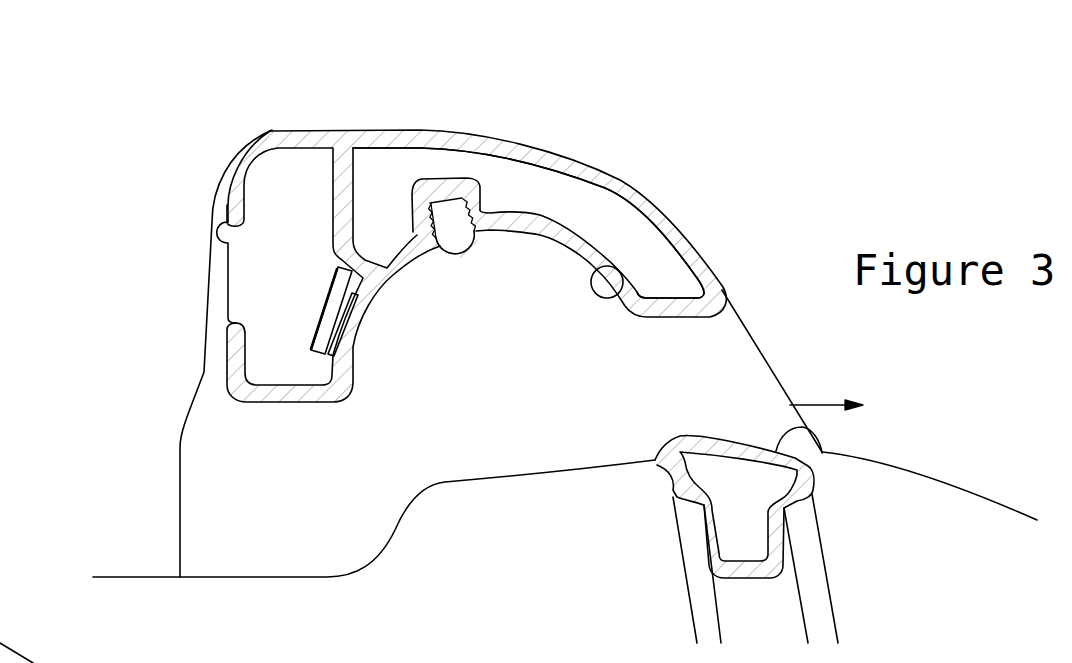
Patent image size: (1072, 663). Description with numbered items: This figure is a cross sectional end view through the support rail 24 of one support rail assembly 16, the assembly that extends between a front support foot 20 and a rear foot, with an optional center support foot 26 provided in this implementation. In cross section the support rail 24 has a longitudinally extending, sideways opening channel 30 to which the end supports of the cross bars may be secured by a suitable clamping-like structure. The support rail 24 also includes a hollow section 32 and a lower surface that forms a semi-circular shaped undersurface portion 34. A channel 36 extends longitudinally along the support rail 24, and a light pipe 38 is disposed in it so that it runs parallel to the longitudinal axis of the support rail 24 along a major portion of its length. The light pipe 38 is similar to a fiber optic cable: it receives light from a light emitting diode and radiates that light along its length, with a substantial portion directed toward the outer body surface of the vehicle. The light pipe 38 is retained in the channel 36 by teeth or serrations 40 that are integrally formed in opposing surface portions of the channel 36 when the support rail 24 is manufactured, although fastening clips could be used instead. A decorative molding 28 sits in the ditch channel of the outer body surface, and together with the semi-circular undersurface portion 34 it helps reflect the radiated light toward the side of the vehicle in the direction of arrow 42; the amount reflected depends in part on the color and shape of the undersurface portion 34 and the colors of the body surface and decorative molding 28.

The support rail assembly 16 is at (190, 131).
The front support foot 20 is at (219, 656).
The support rail 24 is at (258, 138).
The center support foot 26 is at (722, 362).
The decorative molding 28 is at (788, 440).
The sideways opening channel 30 is at (222, 233).
The hollow section 32 is at (622, 220).
The semi-circular shaped undersurface portion 34 is at (637, 285).
The channel 36 is at (462, 197).
The light pipe 38 is at (452, 217).
The teeth or serrations 40 is at (441, 210).
The arrow 42 is at (822, 403).